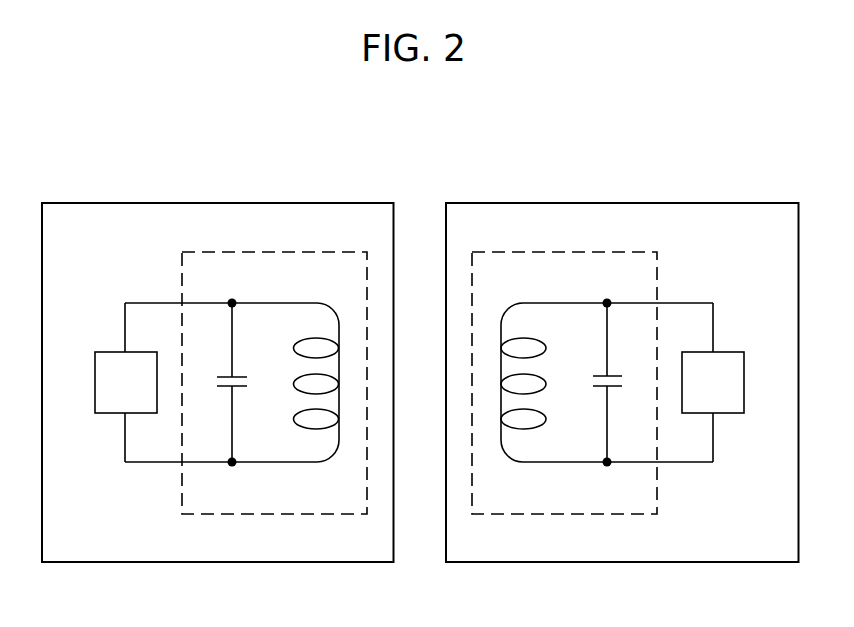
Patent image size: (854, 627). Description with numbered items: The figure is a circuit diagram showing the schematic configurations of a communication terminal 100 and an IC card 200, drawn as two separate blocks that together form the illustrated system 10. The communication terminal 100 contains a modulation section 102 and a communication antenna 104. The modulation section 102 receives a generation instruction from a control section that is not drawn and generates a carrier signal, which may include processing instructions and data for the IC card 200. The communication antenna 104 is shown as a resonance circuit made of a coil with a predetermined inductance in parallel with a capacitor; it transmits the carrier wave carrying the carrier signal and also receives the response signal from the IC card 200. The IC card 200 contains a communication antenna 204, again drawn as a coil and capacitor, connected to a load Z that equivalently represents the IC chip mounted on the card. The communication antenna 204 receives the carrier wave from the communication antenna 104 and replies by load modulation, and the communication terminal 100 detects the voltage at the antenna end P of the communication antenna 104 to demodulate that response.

The wireless power transfer system 10 is at (426, 123).
The communication terminal 100 is at (220, 203).
The modulation section 102 is at (103, 352).
The communication antenna 104 is at (273, 252).
The antenna end P is at (234, 299).
The IC card 200 is at (629, 203).
The communication antenna 204 is at (562, 252).